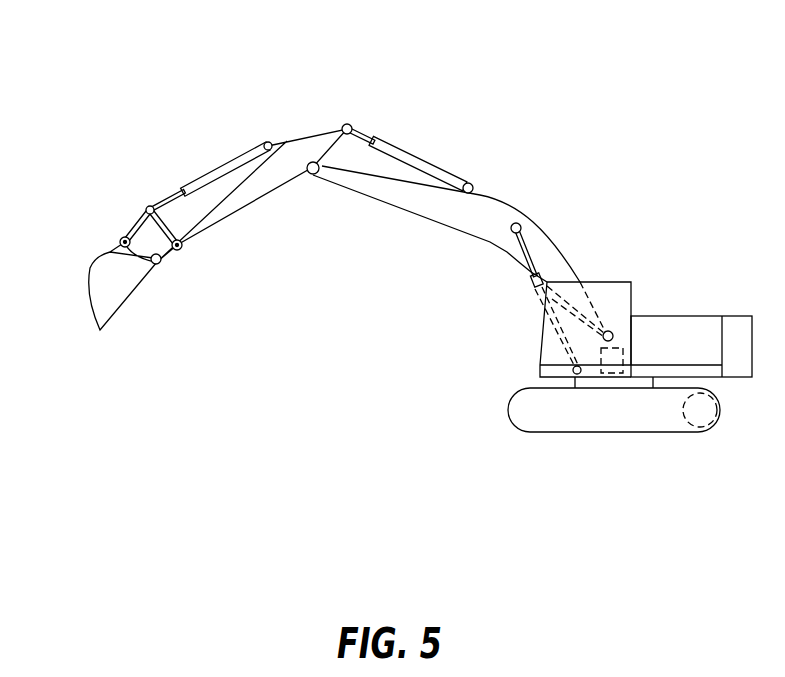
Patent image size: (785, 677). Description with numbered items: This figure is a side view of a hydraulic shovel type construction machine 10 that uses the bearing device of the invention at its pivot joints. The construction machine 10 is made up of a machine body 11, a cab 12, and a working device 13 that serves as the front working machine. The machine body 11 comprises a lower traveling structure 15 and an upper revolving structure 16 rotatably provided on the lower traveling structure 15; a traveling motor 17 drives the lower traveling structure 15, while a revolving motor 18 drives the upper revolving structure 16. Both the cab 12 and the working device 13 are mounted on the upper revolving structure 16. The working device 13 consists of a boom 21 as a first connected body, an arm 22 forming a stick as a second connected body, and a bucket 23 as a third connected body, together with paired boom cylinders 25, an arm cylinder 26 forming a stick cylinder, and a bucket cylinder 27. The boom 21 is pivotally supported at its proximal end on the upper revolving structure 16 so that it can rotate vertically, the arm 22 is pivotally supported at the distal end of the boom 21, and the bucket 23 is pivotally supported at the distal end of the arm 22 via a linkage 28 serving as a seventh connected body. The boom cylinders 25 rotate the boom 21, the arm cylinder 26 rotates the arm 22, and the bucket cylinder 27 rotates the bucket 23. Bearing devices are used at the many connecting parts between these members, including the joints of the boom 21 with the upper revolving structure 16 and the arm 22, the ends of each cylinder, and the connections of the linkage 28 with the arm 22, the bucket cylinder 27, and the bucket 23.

The construction machine 10 is at (493, 71).
The machine body 11 is at (647, 282).
The cab 12 is at (605, 281).
The working device 13 is at (522, 187).
The lower traveling structure 15 is at (635, 433).
The upper revolving structure 16 is at (698, 315).
The traveling motor 17 is at (708, 428).
The revolving motor 18 is at (609, 376).
The boom 21 is at (415, 205).
The arm 22 is at (220, 213).
The bucket 23 is at (113, 305).
The boom cylinder 25 is at (533, 284).
The arm cylinder 26 is at (408, 157).
The bucket cylinder 27 is at (222, 165).
The linkage 28 is at (137, 220).